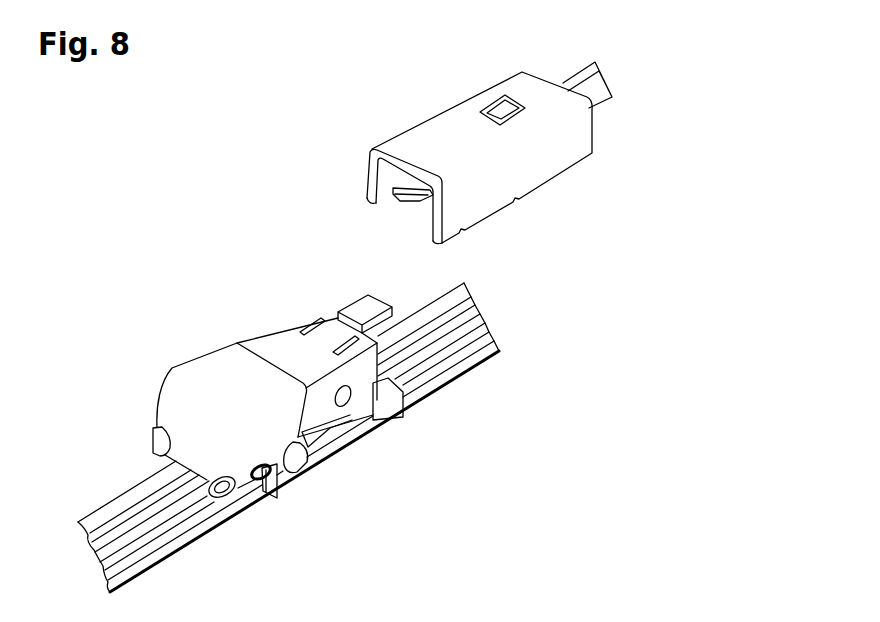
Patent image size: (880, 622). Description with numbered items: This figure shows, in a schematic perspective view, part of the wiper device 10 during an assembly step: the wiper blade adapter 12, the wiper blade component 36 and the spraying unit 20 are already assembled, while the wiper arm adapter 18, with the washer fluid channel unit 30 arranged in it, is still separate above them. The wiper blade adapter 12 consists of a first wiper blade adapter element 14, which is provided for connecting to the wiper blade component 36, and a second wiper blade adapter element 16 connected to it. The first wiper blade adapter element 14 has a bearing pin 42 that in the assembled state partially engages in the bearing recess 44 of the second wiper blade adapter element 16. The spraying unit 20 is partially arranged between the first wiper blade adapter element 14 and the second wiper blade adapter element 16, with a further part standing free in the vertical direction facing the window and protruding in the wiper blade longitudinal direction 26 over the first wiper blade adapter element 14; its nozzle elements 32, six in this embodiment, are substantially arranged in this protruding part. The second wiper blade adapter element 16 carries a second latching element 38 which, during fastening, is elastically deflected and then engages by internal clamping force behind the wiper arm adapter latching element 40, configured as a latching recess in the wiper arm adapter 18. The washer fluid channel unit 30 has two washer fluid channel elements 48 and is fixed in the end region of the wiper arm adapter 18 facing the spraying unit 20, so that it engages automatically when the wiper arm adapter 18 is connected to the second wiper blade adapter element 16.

The wiper device 10 is at (663, 60).
The wiper blade adapter 12 is at (297, 510).
The first wiper blade adapter element 14 is at (390, 414).
The second wiper blade adapter element 16 is at (210, 377).
The wiper arm adapter 18 is at (578, 124).
The spraying unit 20 is at (130, 462).
The wiper blade longitudinal direction 26 is at (563, 357).
The washer fluid channel unit 30 is at (618, 111).
The nozzle element 32 is at (158, 440).
The wiper blade component 36 is at (472, 392).
The second latching element 38 is at (363, 312).
The wiper arm adapter latching element 40 is at (515, 120).
The bearing pin 42 is at (330, 420).
The bearing recess 44 is at (357, 424).
The washer fluid channel element 48 is at (580, 83).